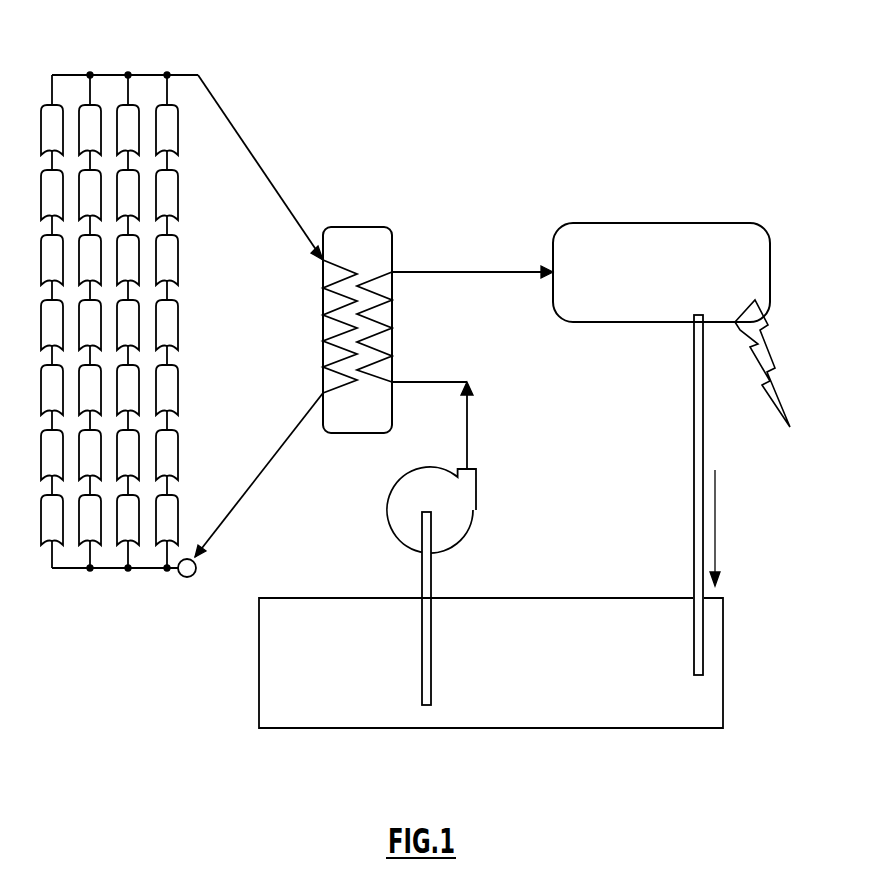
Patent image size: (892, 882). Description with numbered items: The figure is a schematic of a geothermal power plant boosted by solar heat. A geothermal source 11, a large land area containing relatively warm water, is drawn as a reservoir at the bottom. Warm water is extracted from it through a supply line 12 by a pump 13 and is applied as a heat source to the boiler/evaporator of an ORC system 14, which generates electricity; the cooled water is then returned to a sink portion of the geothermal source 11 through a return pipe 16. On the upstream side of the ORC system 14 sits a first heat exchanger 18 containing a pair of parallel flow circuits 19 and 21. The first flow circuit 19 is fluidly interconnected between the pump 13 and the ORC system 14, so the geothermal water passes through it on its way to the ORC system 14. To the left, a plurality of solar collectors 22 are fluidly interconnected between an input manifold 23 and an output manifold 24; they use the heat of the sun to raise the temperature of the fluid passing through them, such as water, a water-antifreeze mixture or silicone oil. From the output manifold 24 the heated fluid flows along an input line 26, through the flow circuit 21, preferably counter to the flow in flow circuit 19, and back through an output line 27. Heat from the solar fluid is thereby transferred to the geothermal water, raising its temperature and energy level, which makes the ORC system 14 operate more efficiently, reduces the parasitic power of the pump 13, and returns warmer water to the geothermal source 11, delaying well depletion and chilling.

The geothermal source 11 is at (633, 715).
The supply line 12 is at (432, 585).
The pump 13 is at (467, 509).
The ORC system 14 is at (675, 223).
The return pipe 16 is at (705, 441).
The first heat exchanger 18 is at (385, 240).
The first flow circuit 19 is at (385, 323).
The flow circuit 21 is at (330, 305).
The solar collectors 22 is at (170, 262).
The input manifold 23 is at (108, 568).
The output manifold 24 is at (148, 75).
The input line 26 is at (247, 140).
The output line 27 is at (262, 474).